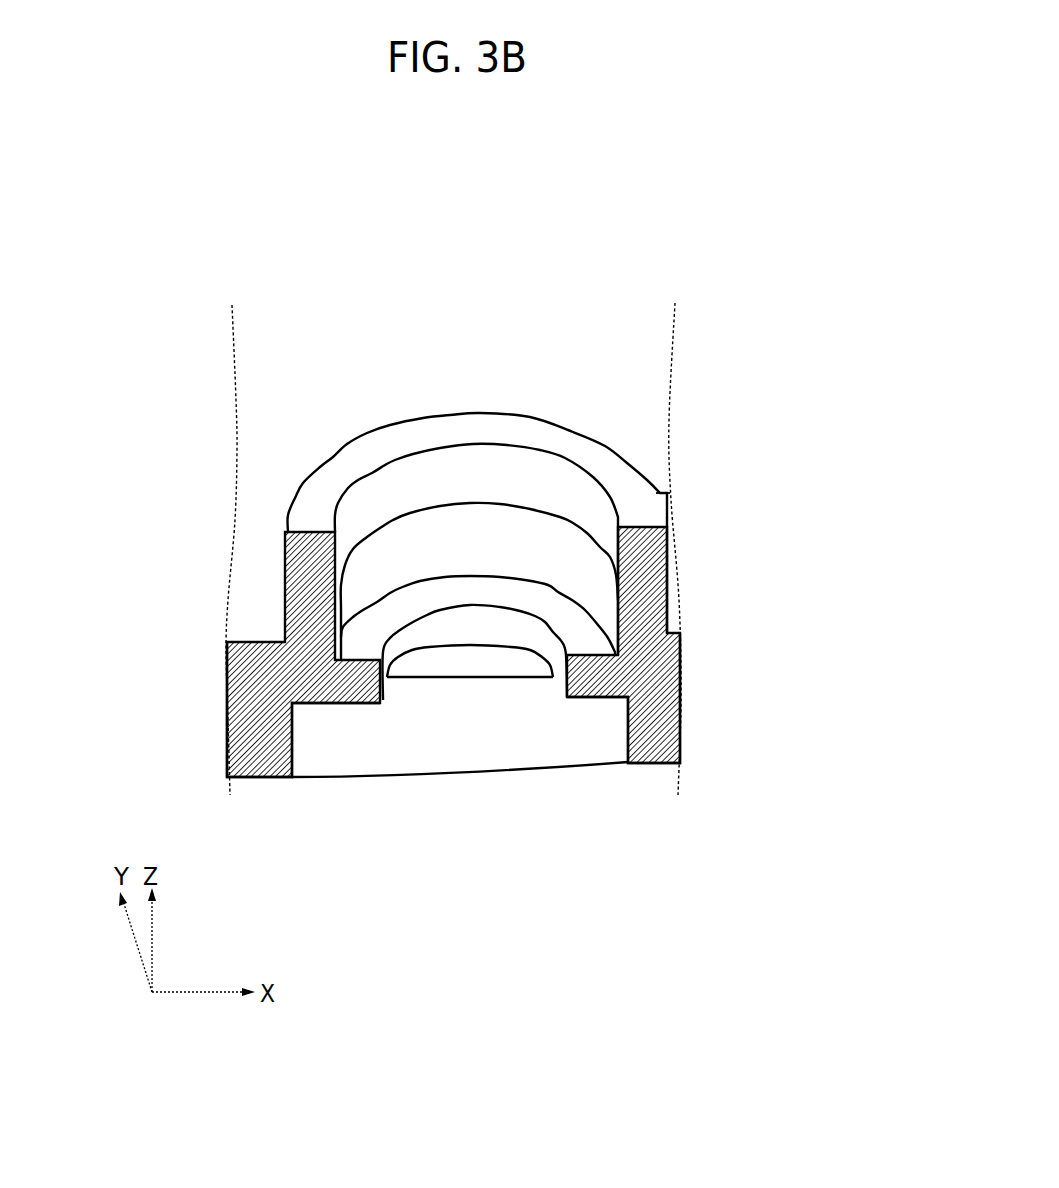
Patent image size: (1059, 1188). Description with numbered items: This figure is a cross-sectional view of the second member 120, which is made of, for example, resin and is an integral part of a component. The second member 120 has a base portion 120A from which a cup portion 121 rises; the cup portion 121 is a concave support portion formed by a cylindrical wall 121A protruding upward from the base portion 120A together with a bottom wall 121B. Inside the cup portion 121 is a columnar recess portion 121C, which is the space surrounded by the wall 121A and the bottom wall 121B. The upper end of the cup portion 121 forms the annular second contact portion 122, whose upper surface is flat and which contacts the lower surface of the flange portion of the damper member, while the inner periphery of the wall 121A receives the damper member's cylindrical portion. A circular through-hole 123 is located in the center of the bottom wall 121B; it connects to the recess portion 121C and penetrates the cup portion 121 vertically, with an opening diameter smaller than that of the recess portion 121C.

The second member 120 is at (765, 162).
The base portion 120A is at (357, 685).
The cup portion 121 is at (670, 550).
The wall 121A is at (493, 480).
The bottom wall 121B is at (384, 620).
The recess portion 121C is at (375, 498).
The second contact portion 122 is at (632, 503).
The through-hole 123 is at (427, 645).